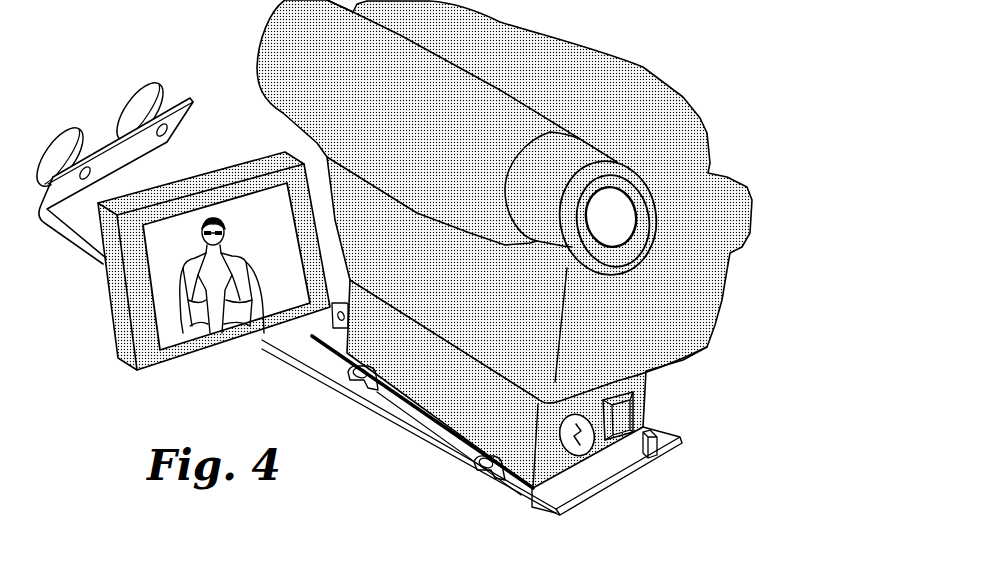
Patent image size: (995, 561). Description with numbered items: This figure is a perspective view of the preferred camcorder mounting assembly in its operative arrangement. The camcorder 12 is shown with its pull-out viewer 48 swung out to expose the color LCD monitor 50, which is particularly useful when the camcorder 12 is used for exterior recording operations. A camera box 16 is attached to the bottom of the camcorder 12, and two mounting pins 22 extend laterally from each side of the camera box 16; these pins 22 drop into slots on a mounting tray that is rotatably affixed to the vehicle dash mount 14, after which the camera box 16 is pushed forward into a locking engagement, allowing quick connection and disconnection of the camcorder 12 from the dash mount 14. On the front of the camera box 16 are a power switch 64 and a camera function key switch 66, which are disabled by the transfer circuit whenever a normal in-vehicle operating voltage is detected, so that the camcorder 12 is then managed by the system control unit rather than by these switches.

The camcorder 12 is at (650, 109).
The vehicle dash mount 14 is at (88, 227).
The camera box 16 is at (647, 387).
The mounting pins 22 is at (350, 373).
The pull-out viewer 48 is at (237, 168).
The LCD monitor 50 is at (170, 255).
The power switch 64 is at (628, 413).
The camera function key switch 66 is at (573, 452).